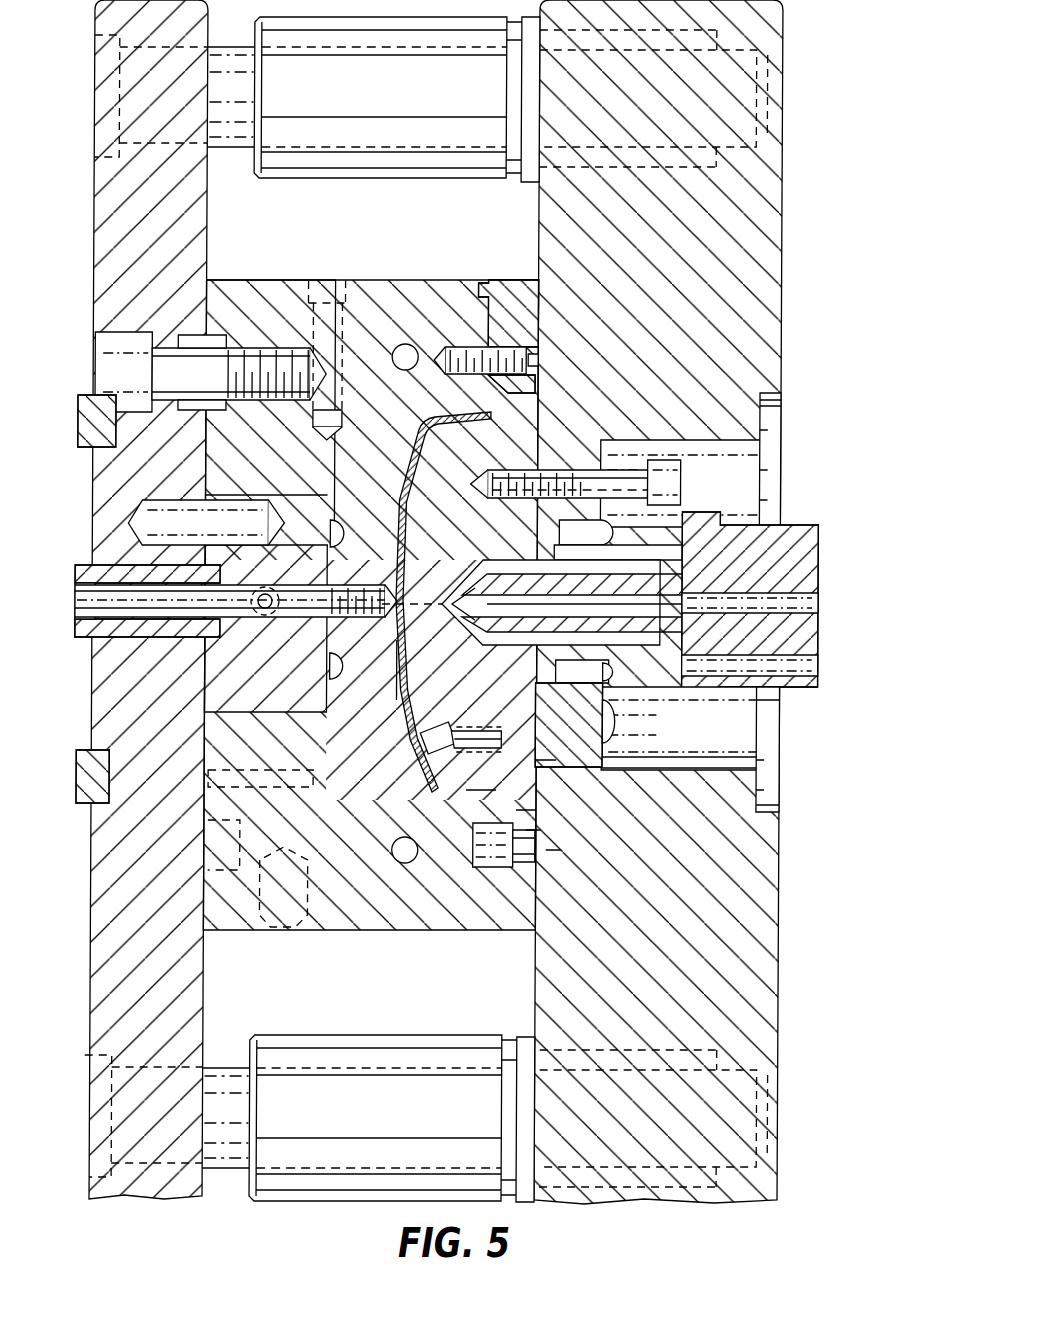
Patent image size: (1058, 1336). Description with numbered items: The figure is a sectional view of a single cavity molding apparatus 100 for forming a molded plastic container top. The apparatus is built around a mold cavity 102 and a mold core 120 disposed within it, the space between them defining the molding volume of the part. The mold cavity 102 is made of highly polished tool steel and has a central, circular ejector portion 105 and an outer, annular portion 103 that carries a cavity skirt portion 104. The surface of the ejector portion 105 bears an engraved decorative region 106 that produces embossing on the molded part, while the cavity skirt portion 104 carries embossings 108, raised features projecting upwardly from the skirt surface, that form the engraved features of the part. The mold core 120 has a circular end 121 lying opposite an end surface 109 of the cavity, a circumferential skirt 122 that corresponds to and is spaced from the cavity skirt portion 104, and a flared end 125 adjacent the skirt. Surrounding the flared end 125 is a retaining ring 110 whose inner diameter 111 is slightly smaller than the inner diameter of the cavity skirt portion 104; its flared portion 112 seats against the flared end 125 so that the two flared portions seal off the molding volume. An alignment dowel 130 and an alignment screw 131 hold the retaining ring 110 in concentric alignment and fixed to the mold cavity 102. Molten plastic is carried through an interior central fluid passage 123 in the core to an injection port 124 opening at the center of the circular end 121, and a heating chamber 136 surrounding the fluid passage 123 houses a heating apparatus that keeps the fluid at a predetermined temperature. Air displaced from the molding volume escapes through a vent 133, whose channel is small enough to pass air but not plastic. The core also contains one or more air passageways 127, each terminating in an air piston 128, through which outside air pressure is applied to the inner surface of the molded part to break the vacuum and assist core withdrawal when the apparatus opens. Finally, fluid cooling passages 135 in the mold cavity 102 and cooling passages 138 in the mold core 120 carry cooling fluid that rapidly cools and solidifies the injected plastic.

The molding apparatus 100 is at (866, 793).
The mold cavity 102 is at (460, 282).
The outer annular portion 103 is at (376, 280).
The cavity skirt portion 104 is at (445, 410).
The ejector portion 105 is at (357, 515).
The engraved decorative region 106 is at (340, 650).
The embossing 108 is at (445, 790).
The end surface 109 is at (483, 280).
The retaining ring 110 is at (511, 930).
The inner diameter 111 is at (472, 768).
The flared portion 112 is at (520, 810).
The mold core 120 is at (690, 524).
The circular end 121 is at (690, 547).
The circumferential skirt 122 is at (590, 447).
The central fluid passage 123 is at (680, 627).
The injection port 124 is at (690, 588).
The flared end 125 is at (523, 418).
The air passageway 127 is at (520, 775).
The air piston 128 is at (500, 800).
The alignment dowel 130 is at (560, 850).
The alignment screw 131 is at (537, 350).
The vent 133 is at (540, 830).
The fluid cooling passages 135 is at (405, 357).
The heating chamber 136 is at (680, 718).
The cooling passages 138 is at (390, 705).